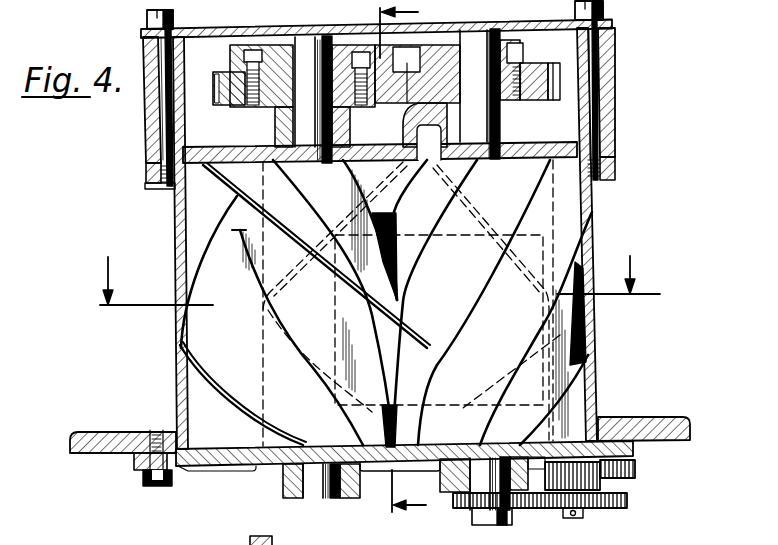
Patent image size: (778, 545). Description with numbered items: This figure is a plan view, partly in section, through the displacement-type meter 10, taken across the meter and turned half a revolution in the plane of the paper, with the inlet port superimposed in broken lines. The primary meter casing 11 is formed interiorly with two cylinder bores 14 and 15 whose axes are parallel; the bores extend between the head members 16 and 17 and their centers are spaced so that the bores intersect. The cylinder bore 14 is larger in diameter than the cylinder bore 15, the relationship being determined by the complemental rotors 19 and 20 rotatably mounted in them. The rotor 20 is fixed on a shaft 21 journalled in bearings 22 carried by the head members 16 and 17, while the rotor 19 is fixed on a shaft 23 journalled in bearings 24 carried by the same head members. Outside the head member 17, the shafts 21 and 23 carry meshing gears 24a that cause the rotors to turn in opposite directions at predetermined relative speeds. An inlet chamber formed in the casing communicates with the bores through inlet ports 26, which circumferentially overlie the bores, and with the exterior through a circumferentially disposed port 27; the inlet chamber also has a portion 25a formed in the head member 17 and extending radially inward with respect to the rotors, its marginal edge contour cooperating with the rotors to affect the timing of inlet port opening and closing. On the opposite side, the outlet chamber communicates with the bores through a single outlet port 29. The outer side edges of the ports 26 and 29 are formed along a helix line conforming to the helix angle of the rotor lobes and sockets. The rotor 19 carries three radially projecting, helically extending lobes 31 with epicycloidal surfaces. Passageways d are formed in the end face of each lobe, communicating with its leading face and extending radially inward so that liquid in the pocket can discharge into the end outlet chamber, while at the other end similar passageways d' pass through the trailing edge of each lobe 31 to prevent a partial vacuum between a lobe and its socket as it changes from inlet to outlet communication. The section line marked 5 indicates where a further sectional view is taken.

The meter 10 is at (601, 216).
The primary meter casing 11 is at (597, 394).
The cylinder bore 14 is at (183, 222).
The cylinder bore 15 is at (572, 247).
The head member 16 is at (418, 453).
The head member 17 is at (143, 147).
The rotor 19 is at (189, 339).
The rotor 20 is at (590, 362).
The shaft 21 is at (490, 40).
The bearing 22 is at (520, 133).
The shaft 23 is at (308, 47).
The bearing 24 is at (344, 131).
The meshing gear 24a is at (227, 107).
The inlet chamber portion 25a is at (429, 165).
The inlet port 26 is at (349, 210).
The circumferentially disposed port 27 is at (438, 404).
The outlet port 29 is at (263, 206).
The lobe 31 is at (222, 237).
The section arrow 5 is at (393, 264).
The passageway d is at (247, 393).
The passageway d' is at (310, 255).